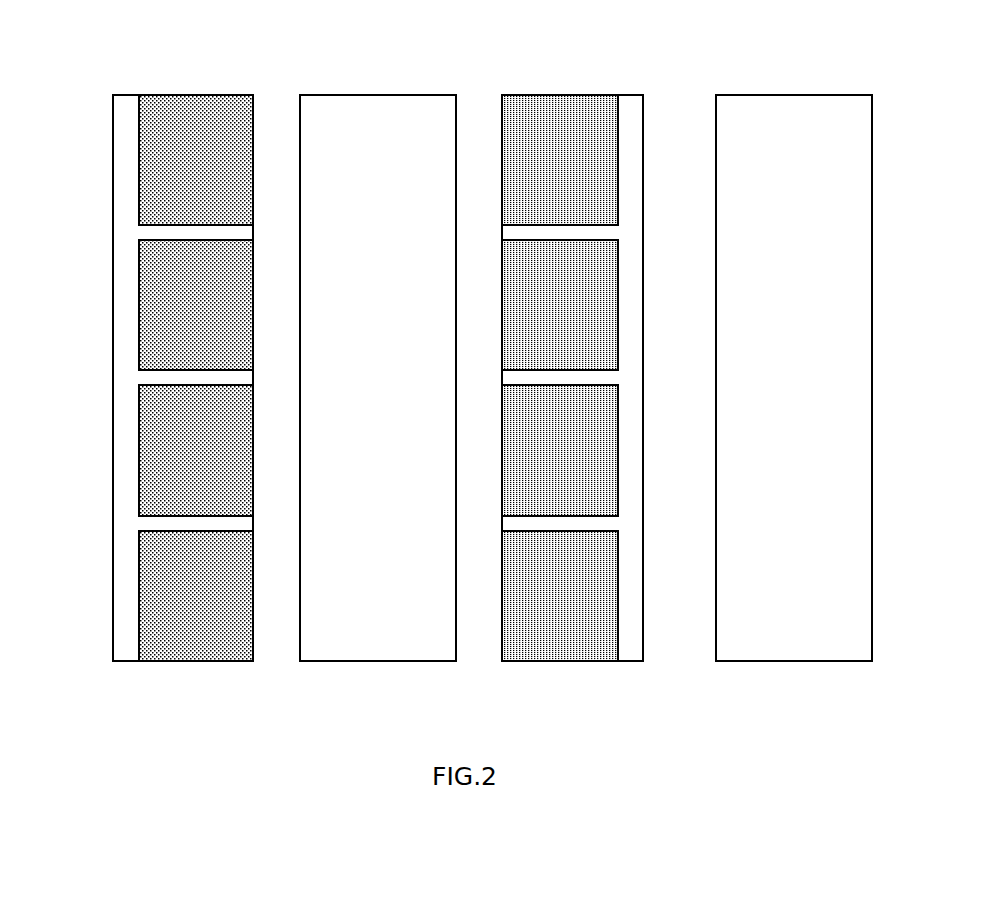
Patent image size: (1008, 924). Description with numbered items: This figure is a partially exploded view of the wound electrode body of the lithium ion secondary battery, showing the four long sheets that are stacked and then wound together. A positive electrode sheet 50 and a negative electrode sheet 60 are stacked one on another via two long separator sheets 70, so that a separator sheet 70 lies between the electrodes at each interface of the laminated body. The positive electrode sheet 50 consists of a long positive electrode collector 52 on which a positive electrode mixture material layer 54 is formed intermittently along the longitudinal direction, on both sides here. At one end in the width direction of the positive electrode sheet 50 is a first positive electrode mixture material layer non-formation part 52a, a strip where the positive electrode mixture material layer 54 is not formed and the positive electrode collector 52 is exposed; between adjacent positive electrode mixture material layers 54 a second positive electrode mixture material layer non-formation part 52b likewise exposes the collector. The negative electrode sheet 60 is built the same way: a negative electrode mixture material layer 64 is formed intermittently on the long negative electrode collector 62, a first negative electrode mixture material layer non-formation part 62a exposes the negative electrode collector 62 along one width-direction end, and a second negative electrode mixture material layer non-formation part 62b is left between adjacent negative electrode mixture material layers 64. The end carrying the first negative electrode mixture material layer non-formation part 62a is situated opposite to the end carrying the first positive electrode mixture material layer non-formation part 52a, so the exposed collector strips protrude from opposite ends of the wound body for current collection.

The positive electrode sheet 50 is at (151, 377).
The positive electrode collector 52 is at (112, 125).
The first positive electrode mixture material layer non-formation part 52a is at (126, 652).
The second positive electrode mixture material layer non-formation part 52b is at (158, 380).
The positive electrode mixture material layer 54 is at (148, 272).
The negative electrode sheet 60 is at (601, 377).
The negative electrode collector 62 is at (644, 125).
The first negative electrode mixture material layer non-formation part 62a is at (631, 652).
The second negative electrode mixture material layer non-formation part 62b is at (598, 381).
The negative electrode mixture material layer 64 is at (604, 272).
The separator sheet 70 is at (390, 92).